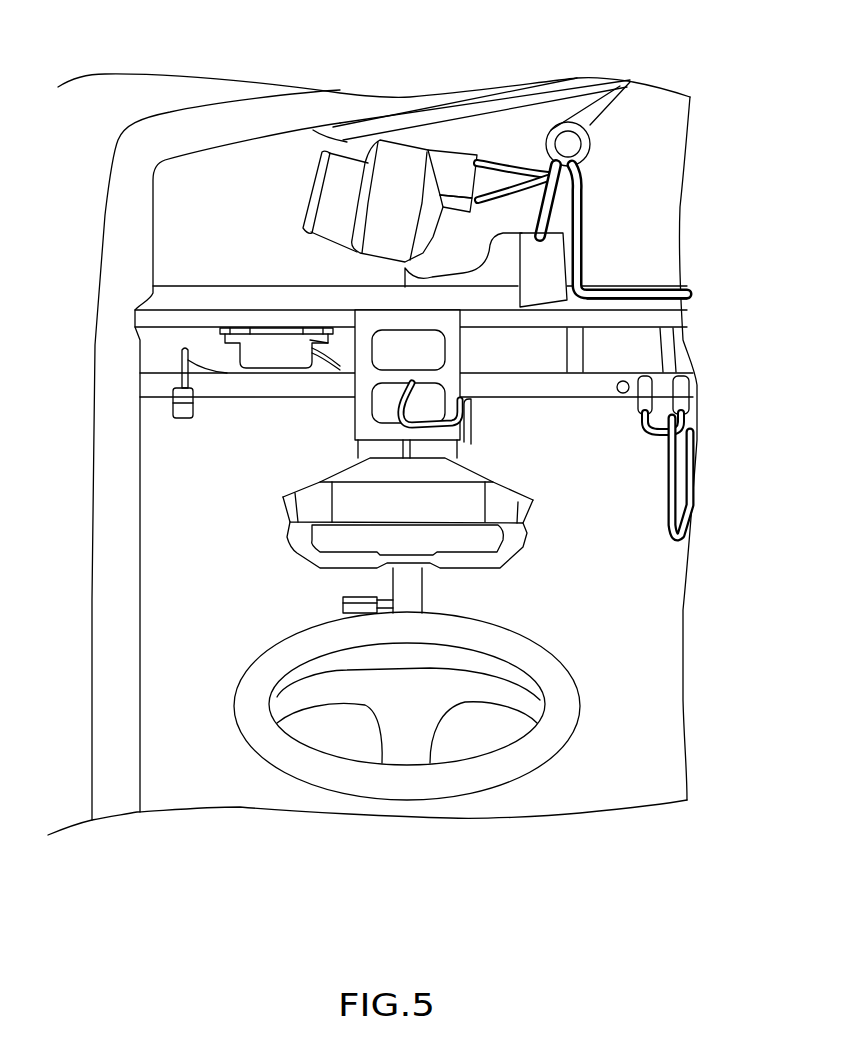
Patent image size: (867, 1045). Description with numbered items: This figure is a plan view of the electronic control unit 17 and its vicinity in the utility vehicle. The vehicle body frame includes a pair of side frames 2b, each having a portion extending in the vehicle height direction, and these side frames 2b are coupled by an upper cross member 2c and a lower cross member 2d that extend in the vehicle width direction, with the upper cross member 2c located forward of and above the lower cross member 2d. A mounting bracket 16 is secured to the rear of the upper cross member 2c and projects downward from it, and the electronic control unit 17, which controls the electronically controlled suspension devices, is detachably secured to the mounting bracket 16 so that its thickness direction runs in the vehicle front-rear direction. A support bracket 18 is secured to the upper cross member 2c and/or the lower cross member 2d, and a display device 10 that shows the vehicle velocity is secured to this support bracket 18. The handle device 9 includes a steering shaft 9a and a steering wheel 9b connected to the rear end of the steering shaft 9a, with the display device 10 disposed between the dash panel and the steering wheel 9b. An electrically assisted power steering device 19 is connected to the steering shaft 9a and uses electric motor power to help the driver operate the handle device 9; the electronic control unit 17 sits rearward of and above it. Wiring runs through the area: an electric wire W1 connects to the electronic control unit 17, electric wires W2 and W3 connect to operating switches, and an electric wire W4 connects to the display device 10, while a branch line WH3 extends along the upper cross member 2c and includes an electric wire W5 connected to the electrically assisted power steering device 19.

The side frame 2b is at (102, 433).
The upper cross member 2c is at (178, 293).
The lower cross member 2d is at (157, 392).
The handle device 9 is at (405, 800).
The steering shaft 9a is at (417, 590).
The steering wheel 9b is at (500, 785).
The display device 10 is at (283, 513).
The mounting bracket 16 is at (317, 328).
The electronic control unit 17 is at (260, 364).
The support bracket 18 is at (455, 355).
The electrically assisted power steering device 19 is at (340, 173).
The electric wire W1 is at (333, 363).
The electric wire W2 is at (180, 352).
The electric wire W3 is at (678, 470).
The electric wire W4 is at (447, 427).
The electric wire W5 is at (583, 220).
The branch line WH3 is at (657, 293).